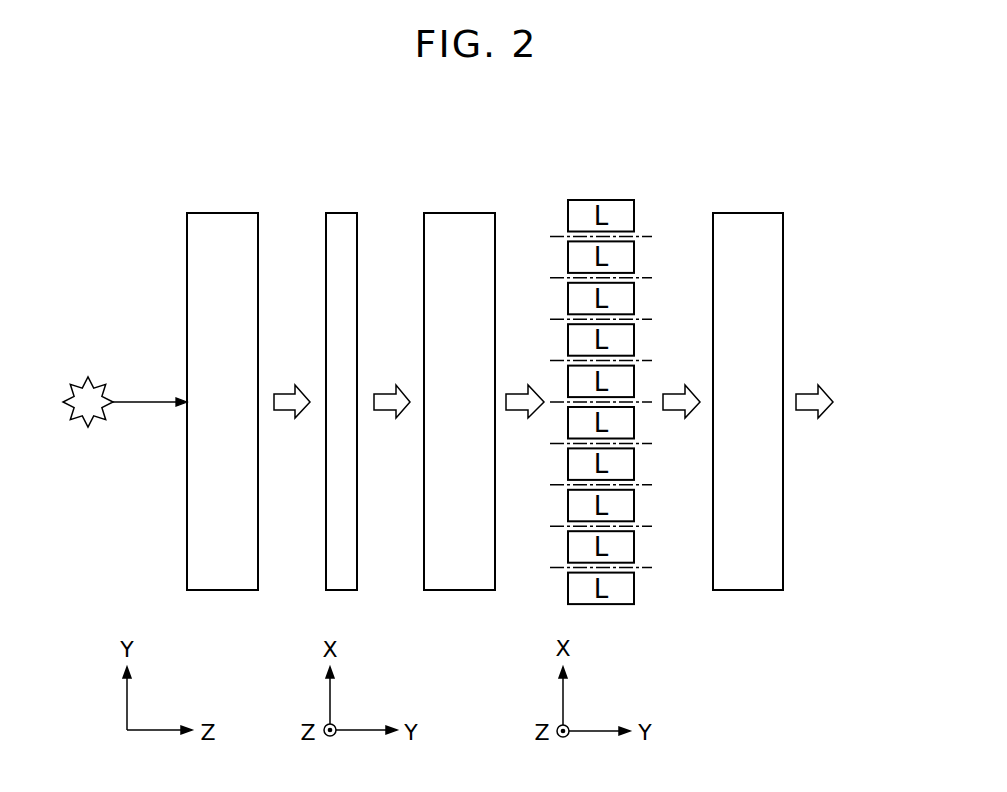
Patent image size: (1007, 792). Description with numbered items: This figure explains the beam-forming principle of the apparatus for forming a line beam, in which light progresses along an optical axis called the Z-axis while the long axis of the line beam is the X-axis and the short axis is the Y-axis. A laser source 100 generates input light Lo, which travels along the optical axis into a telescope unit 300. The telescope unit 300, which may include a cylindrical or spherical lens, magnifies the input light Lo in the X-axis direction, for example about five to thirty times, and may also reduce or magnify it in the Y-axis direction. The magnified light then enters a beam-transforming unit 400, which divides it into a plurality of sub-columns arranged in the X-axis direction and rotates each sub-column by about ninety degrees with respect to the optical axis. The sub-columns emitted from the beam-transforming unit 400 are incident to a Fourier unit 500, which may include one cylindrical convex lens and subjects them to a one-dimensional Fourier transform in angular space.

The laser source 100 is at (90, 378).
The input light Lo is at (150, 403).
The telescope unit 300 is at (224, 220).
The beam-transforming unit 400 is at (460, 220).
The Fourier unit 500 is at (750, 220).